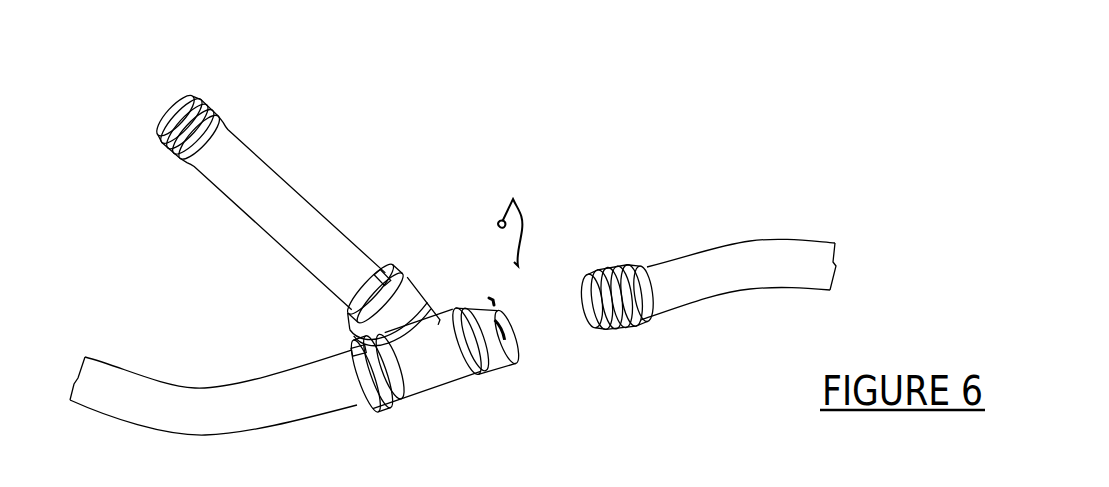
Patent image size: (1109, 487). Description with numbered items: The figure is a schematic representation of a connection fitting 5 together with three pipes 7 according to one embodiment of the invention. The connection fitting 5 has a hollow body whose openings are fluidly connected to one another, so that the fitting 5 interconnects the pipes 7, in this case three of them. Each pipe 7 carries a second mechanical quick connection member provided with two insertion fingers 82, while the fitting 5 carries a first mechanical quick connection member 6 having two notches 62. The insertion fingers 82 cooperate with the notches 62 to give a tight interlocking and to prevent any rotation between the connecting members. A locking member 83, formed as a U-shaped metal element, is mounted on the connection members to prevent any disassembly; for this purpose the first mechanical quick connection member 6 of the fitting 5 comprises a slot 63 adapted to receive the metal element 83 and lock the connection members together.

The connection fitting 5 is at (436, 400).
The first mechanical quick connection member 6 is at (381, 259).
The pipe 7 is at (300, 174).
The notch 62 is at (492, 302).
The slot 63 is at (508, 364).
The insertion finger 82 is at (628, 274).
The locking member 83 is at (522, 192).